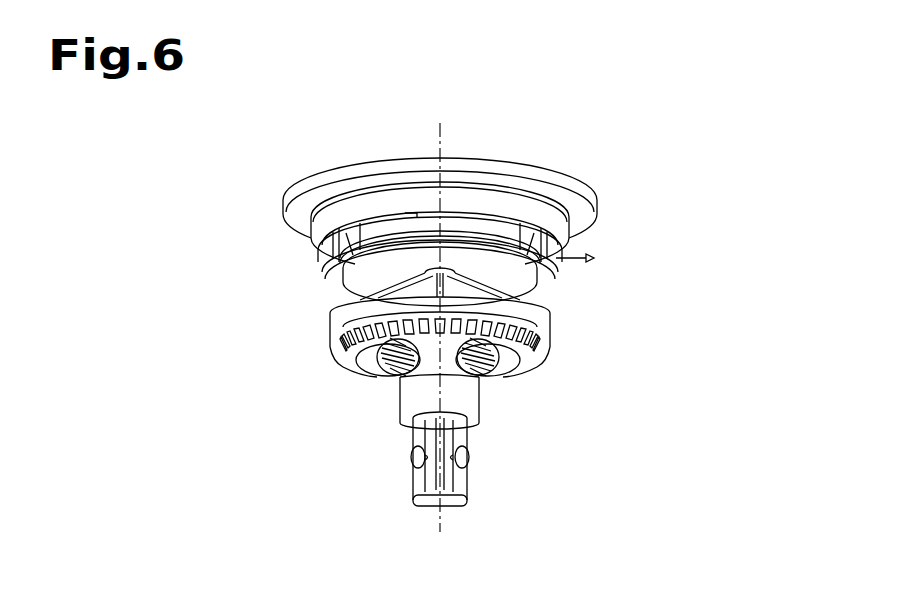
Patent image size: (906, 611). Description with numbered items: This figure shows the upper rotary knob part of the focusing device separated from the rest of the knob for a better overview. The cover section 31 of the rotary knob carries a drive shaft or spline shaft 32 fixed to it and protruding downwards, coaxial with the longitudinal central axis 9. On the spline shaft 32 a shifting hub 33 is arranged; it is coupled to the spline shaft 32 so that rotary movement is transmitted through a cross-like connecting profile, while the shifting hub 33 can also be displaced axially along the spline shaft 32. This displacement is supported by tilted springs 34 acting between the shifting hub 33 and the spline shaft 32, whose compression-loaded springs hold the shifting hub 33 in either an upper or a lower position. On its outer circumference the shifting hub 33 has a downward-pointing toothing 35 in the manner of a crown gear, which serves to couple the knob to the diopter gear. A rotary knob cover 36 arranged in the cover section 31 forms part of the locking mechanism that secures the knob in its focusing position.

The longitudinal central axis 9 is at (440, 127).
The cover section 31 is at (256, 188).
The spline shaft 32 is at (470, 513).
The shifting hub 33 is at (588, 333).
The tilted springs 34 is at (395, 383).
The toothing 35 is at (324, 355).
The rotary knob cover 36 is at (608, 218).